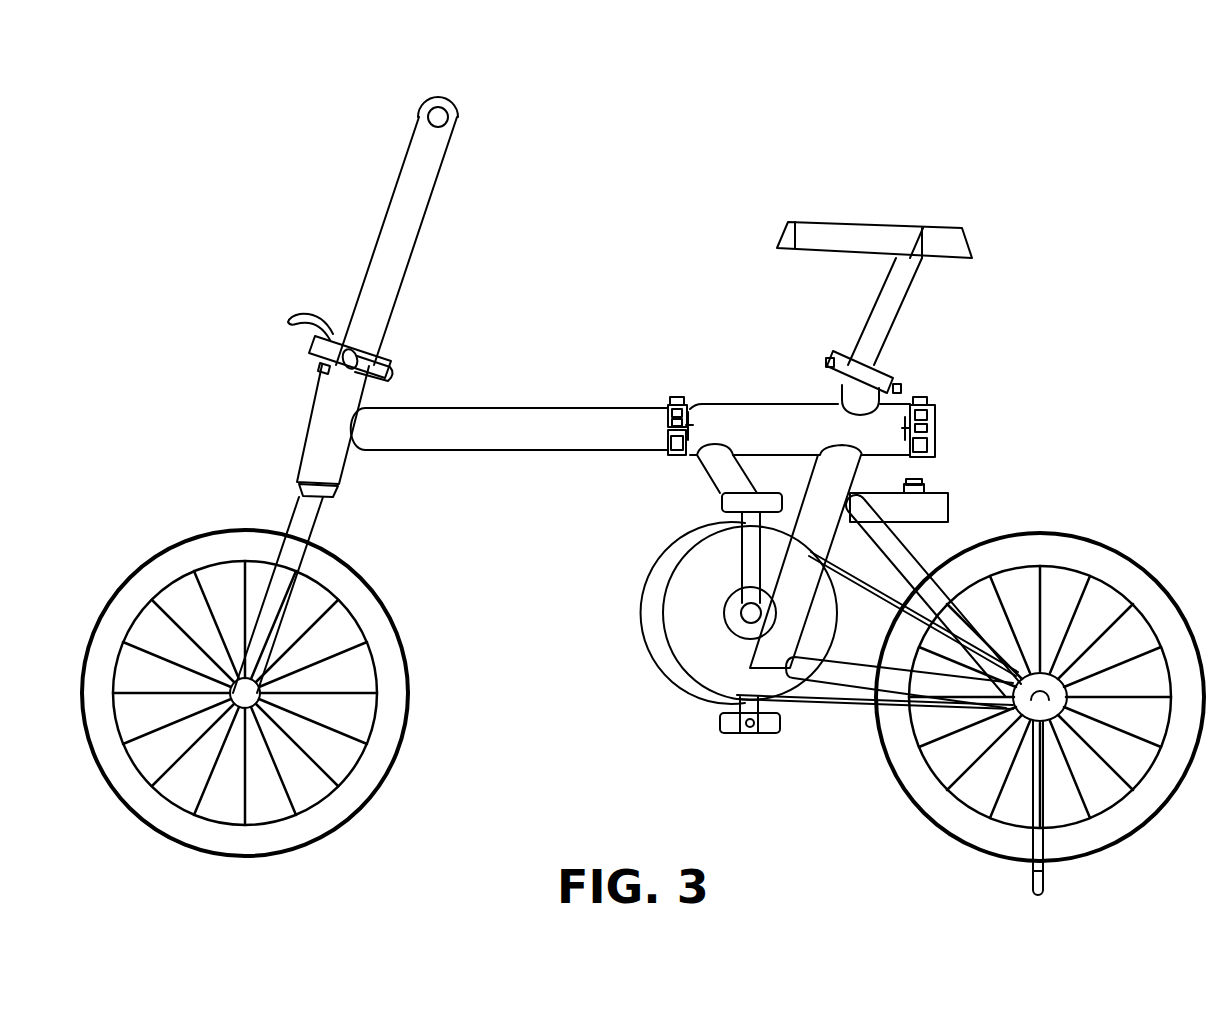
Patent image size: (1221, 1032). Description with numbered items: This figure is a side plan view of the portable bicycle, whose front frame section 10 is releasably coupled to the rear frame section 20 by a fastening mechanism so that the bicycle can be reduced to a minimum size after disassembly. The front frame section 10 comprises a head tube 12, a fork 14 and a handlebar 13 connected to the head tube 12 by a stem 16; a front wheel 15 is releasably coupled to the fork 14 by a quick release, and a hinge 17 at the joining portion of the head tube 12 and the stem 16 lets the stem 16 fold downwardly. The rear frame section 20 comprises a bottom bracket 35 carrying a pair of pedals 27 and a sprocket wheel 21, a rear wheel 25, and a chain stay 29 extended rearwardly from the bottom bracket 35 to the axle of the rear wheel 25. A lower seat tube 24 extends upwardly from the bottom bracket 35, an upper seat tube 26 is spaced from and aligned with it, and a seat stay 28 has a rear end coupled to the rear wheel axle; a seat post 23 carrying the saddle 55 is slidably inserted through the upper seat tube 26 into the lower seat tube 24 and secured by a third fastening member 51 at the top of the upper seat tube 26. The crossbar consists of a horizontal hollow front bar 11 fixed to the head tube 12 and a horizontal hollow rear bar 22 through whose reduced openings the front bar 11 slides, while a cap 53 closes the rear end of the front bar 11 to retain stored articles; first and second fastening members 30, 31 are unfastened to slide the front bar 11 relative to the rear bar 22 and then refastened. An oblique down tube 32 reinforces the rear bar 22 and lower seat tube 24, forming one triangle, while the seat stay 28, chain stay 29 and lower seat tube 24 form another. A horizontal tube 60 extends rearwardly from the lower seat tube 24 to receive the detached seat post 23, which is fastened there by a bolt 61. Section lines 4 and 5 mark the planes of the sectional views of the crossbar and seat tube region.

The front frame section 10 is at (322, 214).
The front bar 11 is at (466, 426).
The head tube 12 is at (320, 418).
The handlebar 13 is at (423, 97).
The fork 14 is at (296, 527).
The front wheel 15 is at (165, 560).
The stem 16 is at (418, 195).
The hinge 17 is at (311, 356).
The rear frame section 20 is at (1133, 508).
The sprocket wheel 21 is at (698, 683).
The rear bar 22 is at (762, 408).
The seat post 23 is at (873, 333).
The lower seat tube 24 is at (780, 668).
The rear wheel 25 is at (1163, 580).
The upper seat tube 26 is at (848, 395).
The pedals 27 is at (723, 731).
The seat stay 28 is at (965, 613).
The chain stay 29 is at (860, 680).
The first fastening member 30 is at (665, 417).
The second fastening member 31 is at (954, 401).
The down tube 32 is at (710, 457).
The bottom bracket 35 is at (700, 632).
The third fastening member 51 is at (897, 363).
The cap 53 is at (932, 417).
The saddle 55 is at (901, 205).
The horizontal tube 60 is at (940, 476).
The bolt 61 is at (925, 478).
The section line 4 is at (695, 508).
The section line 5 is at (920, 210).